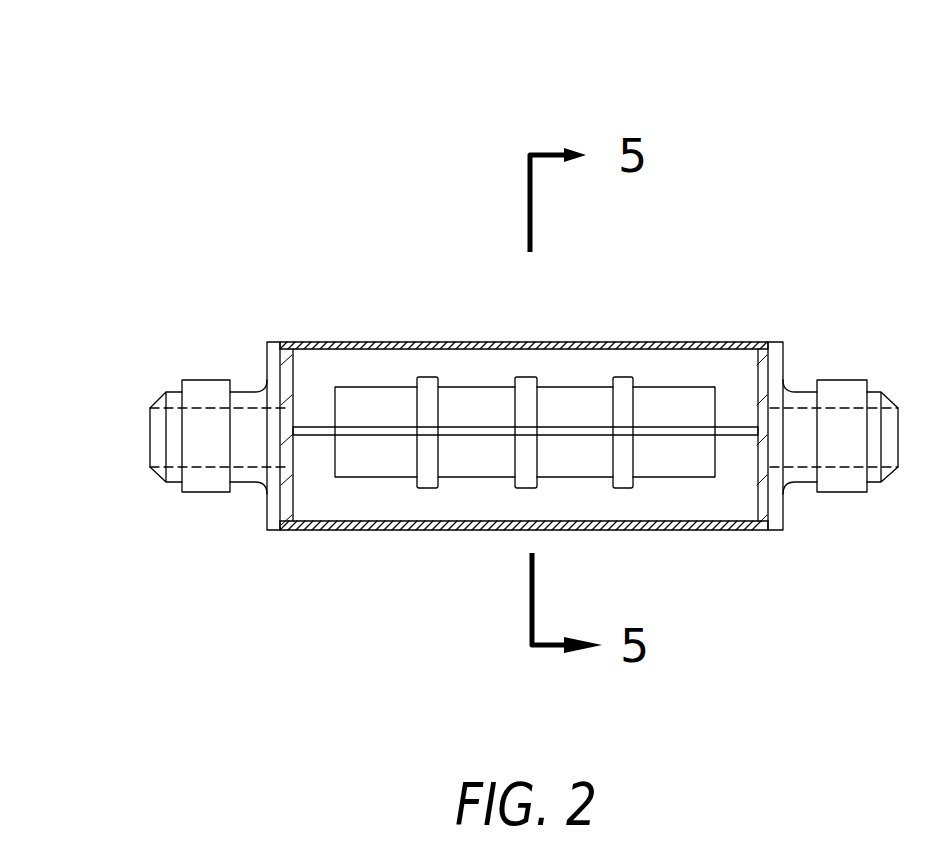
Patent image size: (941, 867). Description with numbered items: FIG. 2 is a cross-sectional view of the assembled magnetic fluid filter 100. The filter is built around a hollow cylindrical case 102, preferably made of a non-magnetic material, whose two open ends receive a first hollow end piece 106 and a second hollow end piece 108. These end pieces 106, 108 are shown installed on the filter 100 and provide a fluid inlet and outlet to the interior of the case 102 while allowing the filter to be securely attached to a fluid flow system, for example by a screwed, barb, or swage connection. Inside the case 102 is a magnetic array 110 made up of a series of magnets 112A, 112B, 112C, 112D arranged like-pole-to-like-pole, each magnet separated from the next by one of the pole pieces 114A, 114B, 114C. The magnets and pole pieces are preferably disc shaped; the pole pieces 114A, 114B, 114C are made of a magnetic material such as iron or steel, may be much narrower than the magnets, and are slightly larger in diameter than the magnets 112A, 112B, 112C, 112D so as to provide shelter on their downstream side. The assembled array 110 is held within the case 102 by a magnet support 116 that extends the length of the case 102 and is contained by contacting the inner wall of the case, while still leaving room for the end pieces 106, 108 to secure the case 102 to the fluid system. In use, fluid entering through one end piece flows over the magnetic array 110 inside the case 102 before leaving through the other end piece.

The magnetic fluid filter 100 is at (373, 158).
The hollow cylindrical case 102 is at (323, 341).
The first hollow end piece 106 is at (208, 379).
The second hollow end piece 108 is at (837, 379).
The magnetic array 110 is at (679, 370).
The magnet 112A is at (381, 386).
The magnet 112B is at (473, 386).
The magnet 112C is at (575, 386).
The magnet 112D is at (703, 385).
The pole piece 114A is at (423, 489).
The pole piece 114B is at (525, 489).
The pole piece 114C is at (622, 489).
The magnet support 116 is at (738, 436).